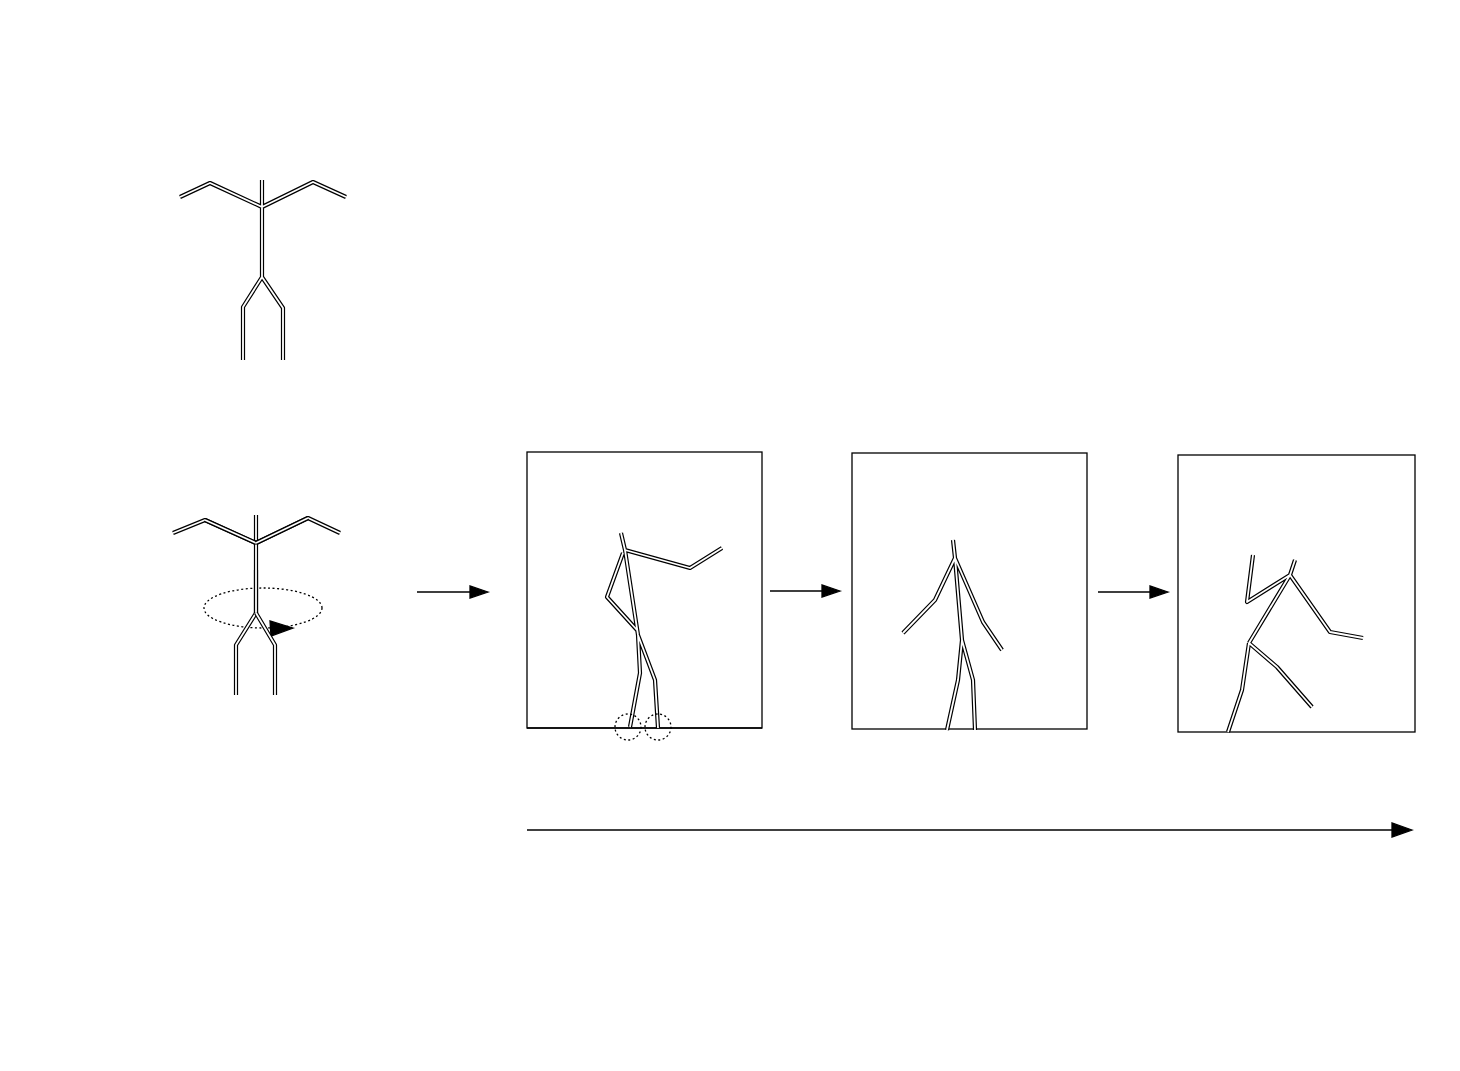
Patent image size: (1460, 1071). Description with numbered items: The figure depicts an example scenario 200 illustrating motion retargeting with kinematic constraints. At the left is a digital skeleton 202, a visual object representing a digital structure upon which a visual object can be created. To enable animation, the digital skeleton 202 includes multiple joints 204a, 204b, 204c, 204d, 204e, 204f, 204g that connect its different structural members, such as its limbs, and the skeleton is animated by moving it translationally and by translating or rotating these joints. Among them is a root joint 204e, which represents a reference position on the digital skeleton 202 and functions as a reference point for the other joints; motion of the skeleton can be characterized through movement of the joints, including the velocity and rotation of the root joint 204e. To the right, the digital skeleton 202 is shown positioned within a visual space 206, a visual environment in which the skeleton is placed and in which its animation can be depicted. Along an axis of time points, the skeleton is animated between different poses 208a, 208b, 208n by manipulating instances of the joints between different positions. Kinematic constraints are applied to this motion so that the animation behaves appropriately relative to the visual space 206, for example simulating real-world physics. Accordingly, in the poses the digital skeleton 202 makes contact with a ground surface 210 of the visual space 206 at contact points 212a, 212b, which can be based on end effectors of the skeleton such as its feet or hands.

The example scenario 200 is at (1329, 97).
The digital skeleton 202 is at (179, 168).
The joint 204a is at (205, 520).
The joint 204b is at (308, 518).
The joint 204c is at (255, 552).
The joint 204d is at (260, 552).
The root joint 204e is at (255, 613).
The joint 204f is at (236, 647).
The joint 204g is at (275, 647).
The visual space 206 is at (553, 472).
The pose 208a is at (665, 492).
The pose 208b is at (1000, 491).
The pose 208n is at (1318, 492).
The ground surface 210 is at (543, 727).
The contact point 212a is at (627, 738).
The contact point 212b is at (657, 740).